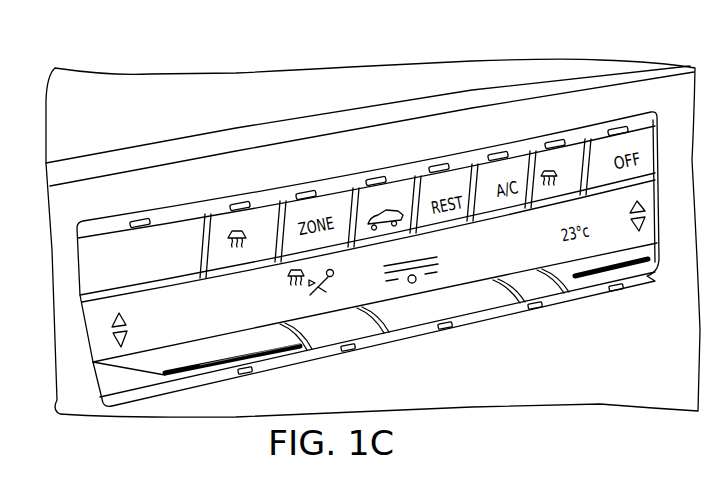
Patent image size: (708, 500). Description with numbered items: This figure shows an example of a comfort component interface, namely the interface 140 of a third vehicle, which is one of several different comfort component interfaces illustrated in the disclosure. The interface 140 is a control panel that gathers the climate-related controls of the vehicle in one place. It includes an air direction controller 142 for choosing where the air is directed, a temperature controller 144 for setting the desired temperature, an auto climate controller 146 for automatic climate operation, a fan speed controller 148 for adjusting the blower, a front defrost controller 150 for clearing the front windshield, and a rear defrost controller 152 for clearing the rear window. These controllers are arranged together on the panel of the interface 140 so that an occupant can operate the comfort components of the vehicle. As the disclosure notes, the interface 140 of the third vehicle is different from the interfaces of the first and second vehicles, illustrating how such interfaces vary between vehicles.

The interface 140 is at (486, 75).
The air direction controller 142 is at (333, 330).
The temperature controller 144 is at (218, 351).
The auto climate controller 146 is at (100, 271).
The fan speed controller 148 is at (450, 303).
The front defrost controller 150 is at (233, 234).
The rear defrost controller 152 is at (541, 176).